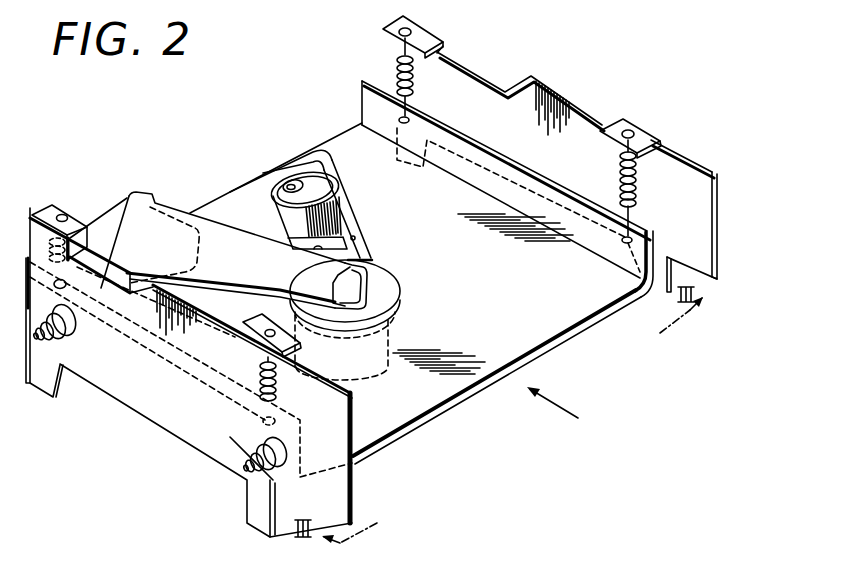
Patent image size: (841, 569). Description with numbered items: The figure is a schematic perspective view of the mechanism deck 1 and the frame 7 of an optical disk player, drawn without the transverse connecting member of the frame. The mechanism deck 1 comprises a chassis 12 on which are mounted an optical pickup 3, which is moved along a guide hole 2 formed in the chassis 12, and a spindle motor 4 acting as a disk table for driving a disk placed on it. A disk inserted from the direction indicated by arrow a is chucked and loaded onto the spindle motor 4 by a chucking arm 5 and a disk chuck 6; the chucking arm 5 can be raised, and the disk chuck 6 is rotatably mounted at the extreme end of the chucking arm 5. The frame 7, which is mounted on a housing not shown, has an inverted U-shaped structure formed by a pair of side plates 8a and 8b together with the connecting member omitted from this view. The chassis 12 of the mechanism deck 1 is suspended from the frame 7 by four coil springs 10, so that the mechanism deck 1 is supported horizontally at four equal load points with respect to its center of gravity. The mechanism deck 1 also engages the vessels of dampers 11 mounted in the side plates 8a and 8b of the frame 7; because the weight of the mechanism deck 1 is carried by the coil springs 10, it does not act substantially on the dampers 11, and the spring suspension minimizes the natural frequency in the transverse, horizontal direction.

The mechanism deck 1 is at (302, 100).
The guide hole 2 is at (357, 238).
The optical pickup 3 is at (316, 180).
The spindle motor 4 is at (387, 345).
The chucking arm 5 is at (195, 218).
The disk chuck 6 is at (383, 290).
The frame 7 is at (571, 93).
The side plate 8a is at (163, 417).
The side plate 8b is at (592, 122).
The coil springs 10 is at (395, 70).
The dampers 11 is at (65, 349).
The chassis 12 is at (243, 182).